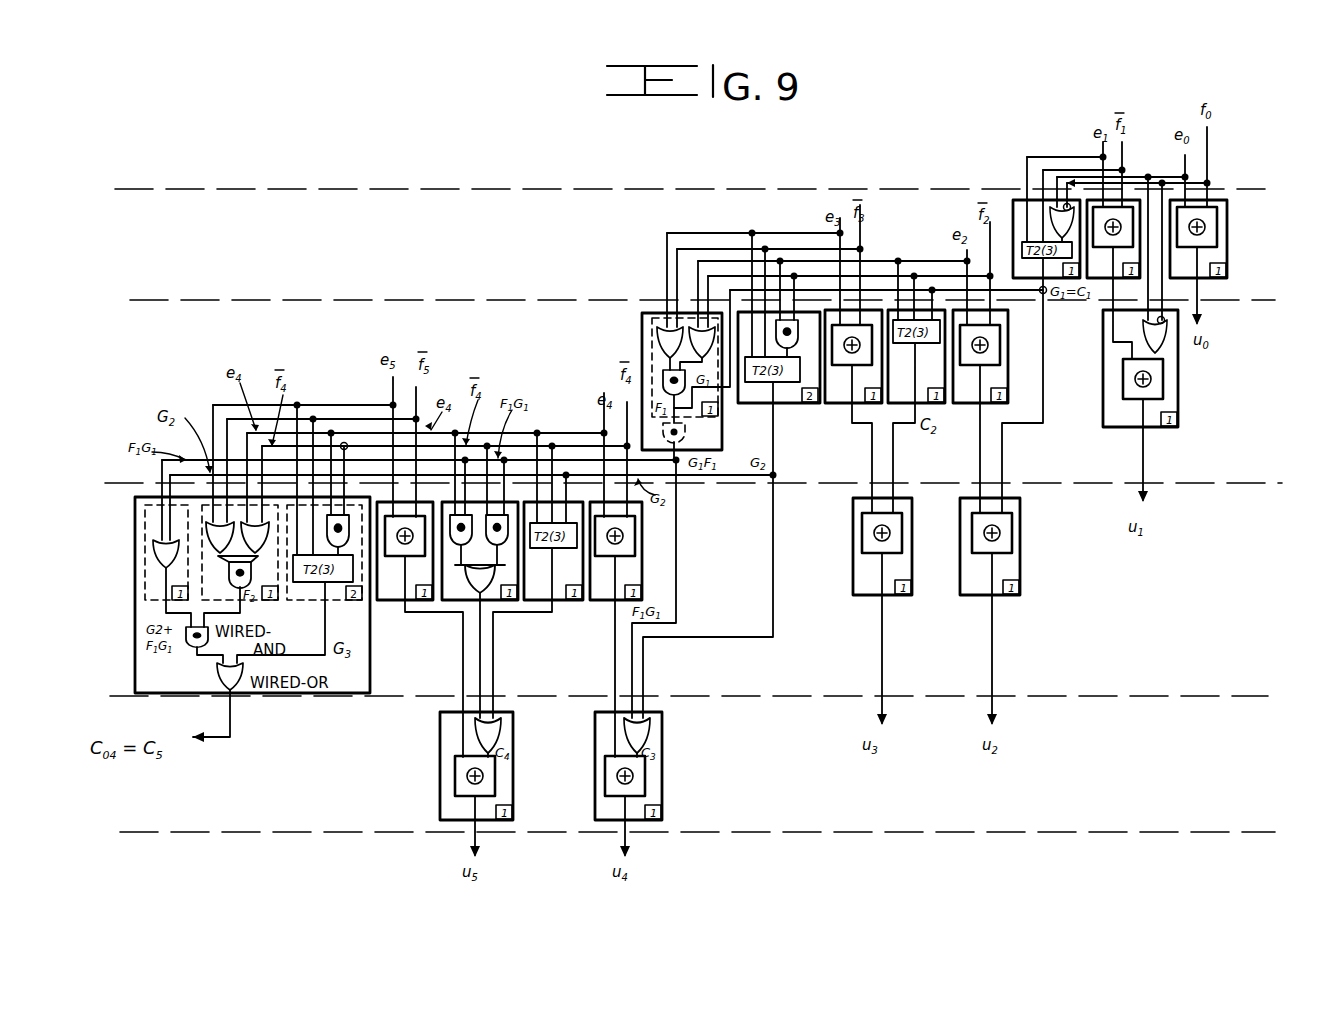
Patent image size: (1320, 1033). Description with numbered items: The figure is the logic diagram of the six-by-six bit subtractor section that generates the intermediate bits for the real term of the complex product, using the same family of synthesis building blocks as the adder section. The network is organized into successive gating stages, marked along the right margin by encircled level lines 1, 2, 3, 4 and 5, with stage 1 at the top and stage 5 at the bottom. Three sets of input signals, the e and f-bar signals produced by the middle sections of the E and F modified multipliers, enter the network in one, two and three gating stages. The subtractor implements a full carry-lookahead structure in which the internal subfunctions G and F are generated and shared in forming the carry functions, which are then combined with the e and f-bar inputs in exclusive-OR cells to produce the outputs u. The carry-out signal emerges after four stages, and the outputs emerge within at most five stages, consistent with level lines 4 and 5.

The first logic level line 1 is at (706, 188).
The second logic level line 2 is at (718, 302).
The third logic level line 3 is at (709, 480).
The fourth logic level line 4 is at (712, 695).
The fifth logic level line 5 is at (720, 832).